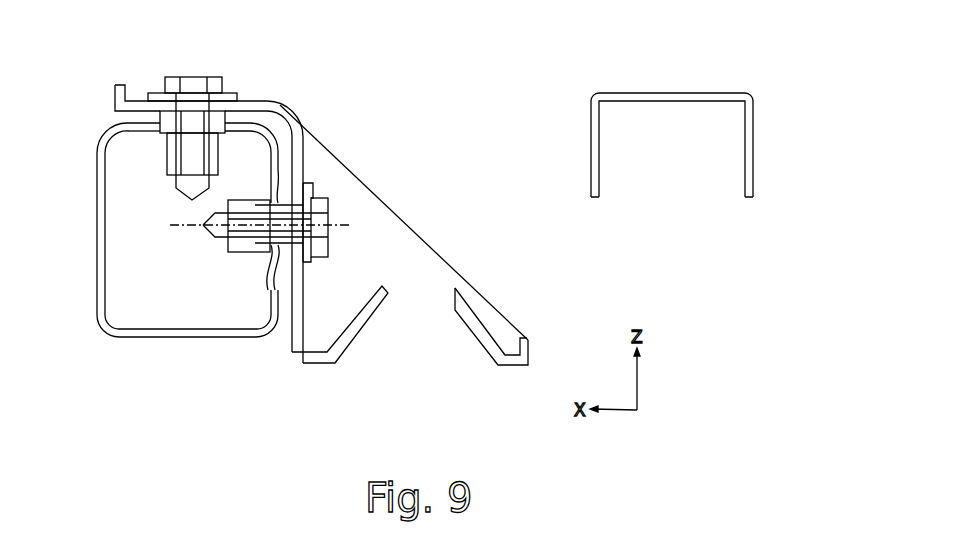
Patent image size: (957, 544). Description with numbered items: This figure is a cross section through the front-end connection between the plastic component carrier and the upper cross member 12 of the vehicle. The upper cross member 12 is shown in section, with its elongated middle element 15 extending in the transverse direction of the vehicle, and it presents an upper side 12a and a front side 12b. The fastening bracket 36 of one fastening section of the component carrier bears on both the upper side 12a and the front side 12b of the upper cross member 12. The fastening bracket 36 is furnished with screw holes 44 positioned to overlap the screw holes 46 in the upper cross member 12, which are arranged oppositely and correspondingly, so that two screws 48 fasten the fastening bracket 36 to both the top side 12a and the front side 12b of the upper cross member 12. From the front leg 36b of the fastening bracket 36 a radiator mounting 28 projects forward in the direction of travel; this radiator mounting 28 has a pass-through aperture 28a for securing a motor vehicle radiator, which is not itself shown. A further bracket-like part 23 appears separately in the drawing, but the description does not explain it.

The upper cross member 12 is at (117, 354).
The upper side 12a is at (243, 102).
The front side 12b is at (272, 283).
The middle element 15 is at (165, 337).
The U-shaped bracket 23 is at (685, 100).
The radiator mounting 28 is at (517, 367).
The pass-through aperture 28a is at (418, 320).
The fastening bracket 36 is at (287, 99).
The front leg 36b is at (296, 305).
The screw holes 44 is at (120, 103).
The screw holes 46 is at (160, 131).
The screws 48 is at (163, 162).